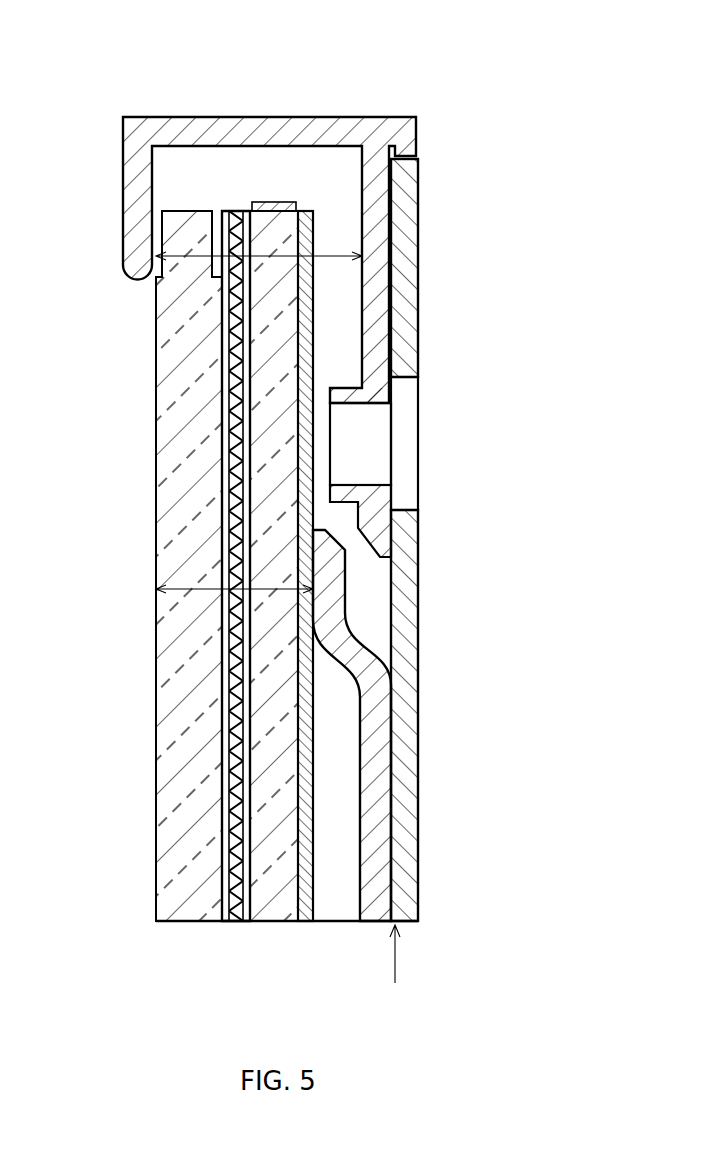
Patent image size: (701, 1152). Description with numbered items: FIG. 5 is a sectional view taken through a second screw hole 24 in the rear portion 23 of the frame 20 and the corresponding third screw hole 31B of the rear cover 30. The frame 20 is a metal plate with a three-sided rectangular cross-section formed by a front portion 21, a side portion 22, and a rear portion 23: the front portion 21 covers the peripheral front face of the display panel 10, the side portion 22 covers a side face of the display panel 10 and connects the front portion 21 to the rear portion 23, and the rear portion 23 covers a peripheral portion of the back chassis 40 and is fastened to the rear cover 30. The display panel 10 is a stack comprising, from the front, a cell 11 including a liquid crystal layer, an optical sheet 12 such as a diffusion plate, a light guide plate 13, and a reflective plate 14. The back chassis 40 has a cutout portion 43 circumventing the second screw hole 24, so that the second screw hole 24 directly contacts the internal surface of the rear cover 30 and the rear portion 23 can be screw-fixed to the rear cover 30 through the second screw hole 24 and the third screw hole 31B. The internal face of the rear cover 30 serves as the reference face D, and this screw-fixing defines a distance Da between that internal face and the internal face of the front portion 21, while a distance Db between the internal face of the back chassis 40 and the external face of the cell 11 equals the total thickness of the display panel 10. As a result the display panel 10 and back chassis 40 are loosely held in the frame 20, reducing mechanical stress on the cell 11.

The display panel 10 is at (287, 614).
The cell 11 is at (178, 912).
The optical sheet 12 is at (253, 926).
The light guide plate 13 is at (275, 910).
The reflective plate 14 is at (321, 594).
The frame 20 is at (268, 210).
The front portion 21 is at (135, 165).
The side portion 22 is at (254, 130).
The rear portion 23 is at (359, 233).
The second screw hole 24 is at (355, 485).
The rear cover 30 is at (410, 313).
The third screw hole 31B is at (410, 507).
The back chassis 40 is at (394, 715).
The cutout portion 43 is at (332, 537).
The distance Da is at (332, 256).
The distance Db is at (182, 588).
The reference face D is at (397, 968).